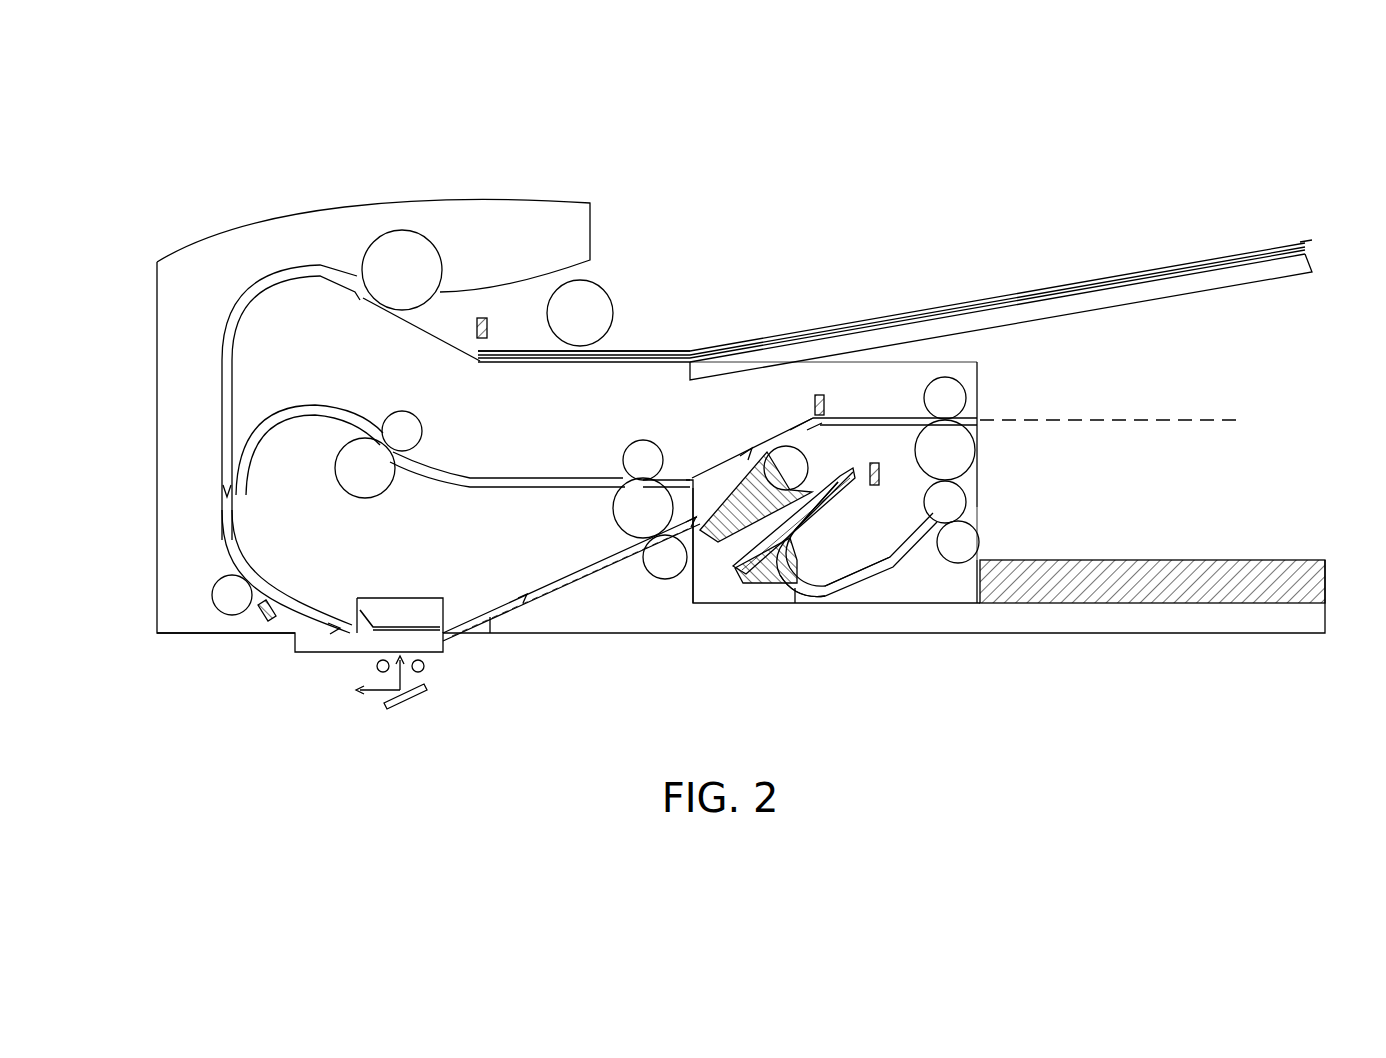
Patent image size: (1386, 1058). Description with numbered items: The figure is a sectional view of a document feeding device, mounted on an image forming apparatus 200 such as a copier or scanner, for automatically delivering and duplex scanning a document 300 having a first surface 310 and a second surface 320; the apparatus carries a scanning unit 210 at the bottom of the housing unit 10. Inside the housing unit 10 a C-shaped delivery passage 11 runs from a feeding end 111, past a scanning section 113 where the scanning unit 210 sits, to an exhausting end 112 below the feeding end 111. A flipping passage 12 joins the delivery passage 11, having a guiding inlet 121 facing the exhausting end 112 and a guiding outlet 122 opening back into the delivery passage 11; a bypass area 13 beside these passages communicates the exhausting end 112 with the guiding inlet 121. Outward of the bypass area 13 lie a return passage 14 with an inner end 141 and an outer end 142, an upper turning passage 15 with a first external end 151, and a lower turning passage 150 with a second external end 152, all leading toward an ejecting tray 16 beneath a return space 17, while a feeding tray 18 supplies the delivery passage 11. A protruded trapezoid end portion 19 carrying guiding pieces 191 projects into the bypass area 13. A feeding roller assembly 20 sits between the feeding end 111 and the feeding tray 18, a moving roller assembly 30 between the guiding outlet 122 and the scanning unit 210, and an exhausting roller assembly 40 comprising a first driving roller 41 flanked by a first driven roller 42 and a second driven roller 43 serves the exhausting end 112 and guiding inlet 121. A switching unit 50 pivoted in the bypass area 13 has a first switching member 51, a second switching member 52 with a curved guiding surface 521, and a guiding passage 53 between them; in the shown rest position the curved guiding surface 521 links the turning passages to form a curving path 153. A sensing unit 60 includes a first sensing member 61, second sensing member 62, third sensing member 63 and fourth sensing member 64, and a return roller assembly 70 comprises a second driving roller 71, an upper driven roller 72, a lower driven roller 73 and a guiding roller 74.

The housing unit 10 is at (150, 445).
The C-shaped delivery passage 11 is at (236, 332).
The feeding end 111 is at (355, 278).
The guiding outlet 122 is at (240, 412).
The flipping passage 12 is at (530, 476).
The guiding inlet 121 is at (668, 468).
The scanning section 113 is at (372, 636).
The exhausting end 112 is at (697, 540).
The bypass area 13 is at (748, 460).
The return passage 14 is at (880, 416).
The inner end 141 is at (828, 424).
The outer end 142 is at (977, 414).
The upper turning passage 15 is at (907, 565).
The lower turning passage 150 is at (932, 577).
The first external end 151 is at (968, 490).
The second external end 152 is at (972, 518).
The curving path 153 is at (822, 598).
The ejecting tray 16 is at (1182, 560).
The return space 17 is at (1118, 488).
The feeding tray 18 is at (1068, 305).
The protruded trapezoid end portion 19 is at (738, 470).
The guiding pieces 191 is at (705, 490).
The feeding roller assembly 20 is at (402, 232).
The moving roller assembly 30 is at (232, 617).
The exhausting roller assembly 40 is at (612, 521).
The first driving roller 41 is at (633, 512).
The first driven roller 42 is at (663, 560).
The second driven roller 43 is at (640, 440).
The switching unit 50 is at (745, 588).
The first switching member 51 is at (728, 525).
The second switching member 52 is at (760, 548).
The curved guiding surface 521 is at (790, 565).
The guiding passage 53 is at (745, 584).
The sensing unit 60 is at (482, 318).
The first sensing member 61 is at (497, 325).
The second sensing member 62 is at (266, 630).
The third sensing member 63 is at (818, 393).
The fourth sensing member 64 is at (876, 487).
The return roller assembly 70 is at (943, 378).
The second driving roller 71 is at (976, 450).
The upper driven roller 72 is at (963, 396).
The lower driven roller 73 is at (968, 502).
The guiding roller 74 is at (963, 562).
The image forming apparatus 200 is at (170, 640).
The scanning unit 210 is at (416, 702).
The document 300 is at (1286, 240).
The first surface 310 is at (1218, 250).
The second surface 320 is at (1308, 248).